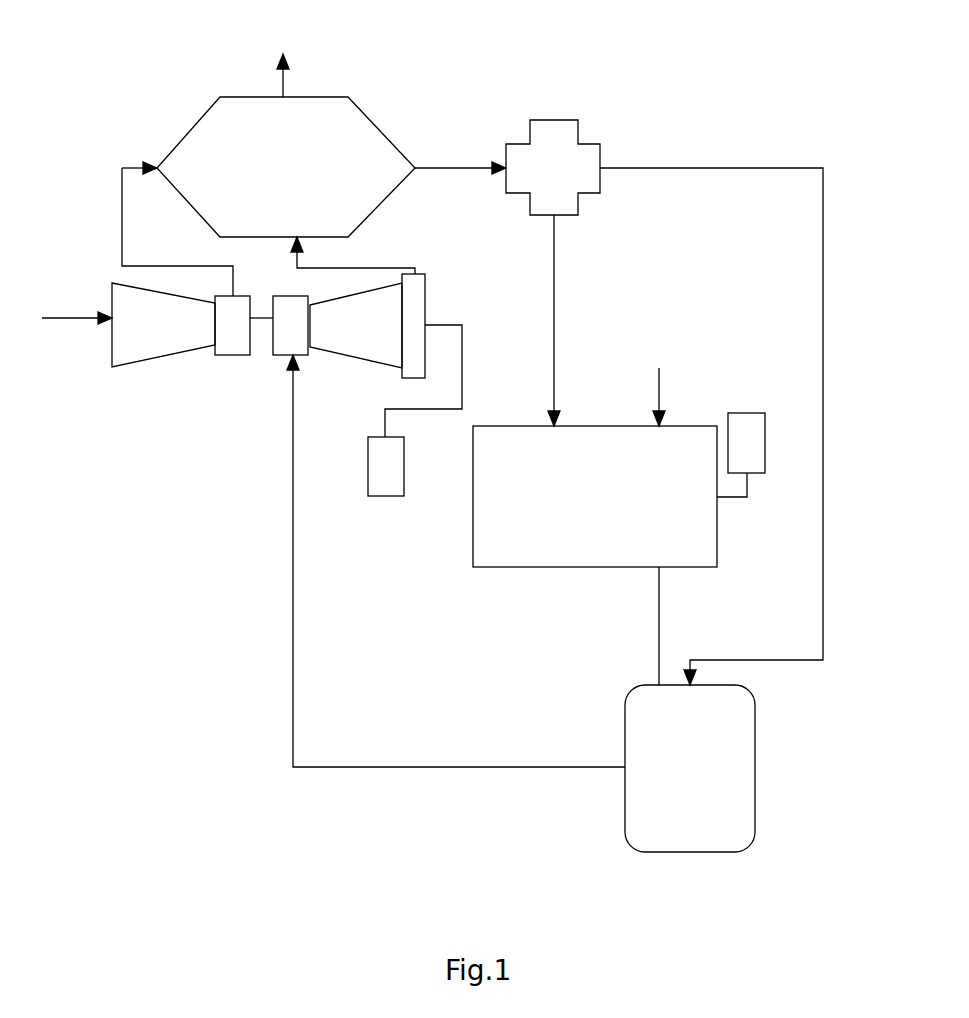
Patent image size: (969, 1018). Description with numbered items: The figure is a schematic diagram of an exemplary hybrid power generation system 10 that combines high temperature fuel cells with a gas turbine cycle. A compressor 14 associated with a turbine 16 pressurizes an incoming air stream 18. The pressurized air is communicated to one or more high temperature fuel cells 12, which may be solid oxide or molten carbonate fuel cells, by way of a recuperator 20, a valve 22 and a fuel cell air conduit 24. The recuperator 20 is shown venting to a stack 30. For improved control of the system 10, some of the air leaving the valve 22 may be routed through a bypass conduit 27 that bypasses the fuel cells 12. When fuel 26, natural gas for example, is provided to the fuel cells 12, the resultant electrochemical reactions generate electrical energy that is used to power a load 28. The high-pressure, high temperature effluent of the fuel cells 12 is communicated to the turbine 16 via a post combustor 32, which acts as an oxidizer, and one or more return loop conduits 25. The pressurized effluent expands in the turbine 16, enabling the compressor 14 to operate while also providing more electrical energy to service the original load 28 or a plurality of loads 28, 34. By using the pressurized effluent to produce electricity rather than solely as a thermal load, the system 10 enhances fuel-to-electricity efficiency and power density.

The hybrid system 10 is at (670, 132).
The high temperature fuel cells 12 is at (606, 514).
The compressor 14 is at (163, 337).
The turbine 16 is at (373, 334).
The air stream 18 is at (61, 313).
The recuperator 20 is at (302, 181).
The valve 22 is at (569, 184).
The fuel cell air conduit 24 is at (122, 236).
The return loop conduit 25 is at (658, 626).
The fuel 26 is at (668, 368).
The conduit 27 is at (716, 168).
The load 28 is at (760, 461).
The stack 30 is at (291, 50).
The post combustor 32 is at (702, 780).
The load 34 is at (400, 477).